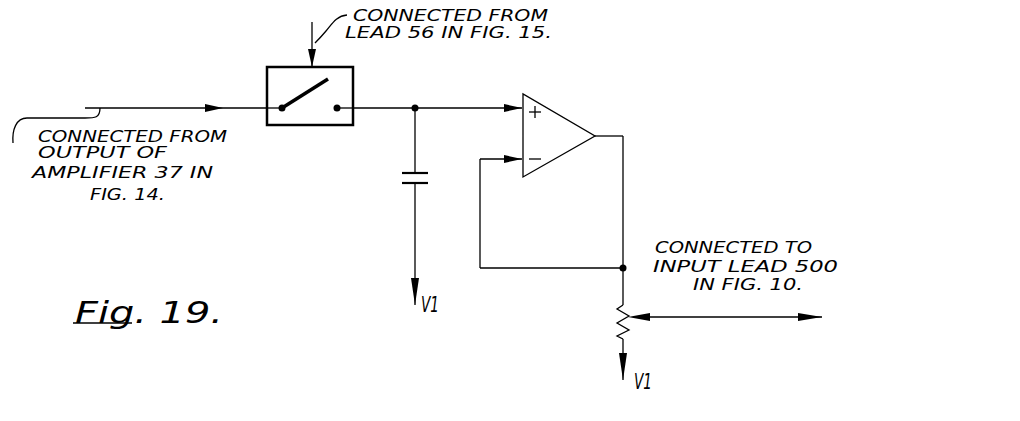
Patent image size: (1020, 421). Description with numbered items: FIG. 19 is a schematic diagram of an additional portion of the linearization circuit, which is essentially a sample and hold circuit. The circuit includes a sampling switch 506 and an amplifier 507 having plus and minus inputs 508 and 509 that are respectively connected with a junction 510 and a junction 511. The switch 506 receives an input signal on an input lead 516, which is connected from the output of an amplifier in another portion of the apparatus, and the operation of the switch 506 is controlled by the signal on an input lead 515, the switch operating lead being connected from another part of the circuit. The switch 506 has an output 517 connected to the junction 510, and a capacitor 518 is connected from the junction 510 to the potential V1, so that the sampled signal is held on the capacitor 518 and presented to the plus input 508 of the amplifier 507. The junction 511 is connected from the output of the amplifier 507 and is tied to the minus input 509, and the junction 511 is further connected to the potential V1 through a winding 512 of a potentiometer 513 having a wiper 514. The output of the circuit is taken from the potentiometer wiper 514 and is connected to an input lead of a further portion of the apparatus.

The sampling switch 506 is at (360, 69).
The amplifier 507 is at (562, 104).
The plus input 508 is at (467, 108).
The minus input 509 is at (498, 158).
The junction 510 is at (442, 88).
The junction 511 is at (621, 266).
The winding 512 is at (620, 327).
The potentiometer 513 is at (655, 343).
The wiper 514 is at (694, 319).
The input lead 515 is at (312, 32).
The input lead 516 is at (186, 80).
The output 517 is at (378, 111).
The capacitor 518 is at (408, 187).